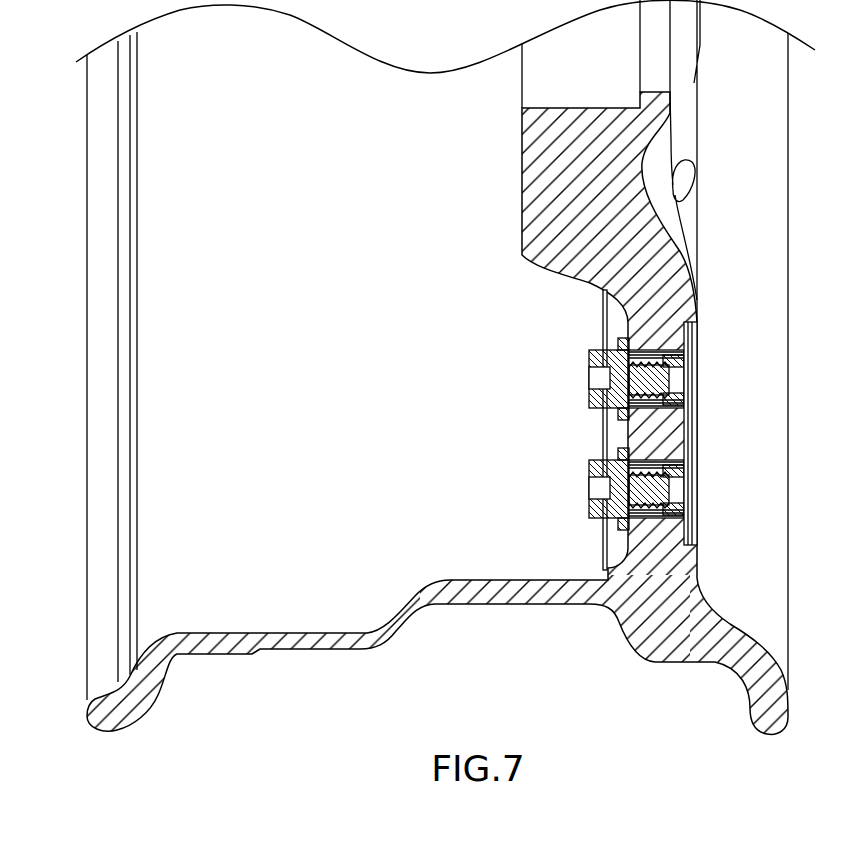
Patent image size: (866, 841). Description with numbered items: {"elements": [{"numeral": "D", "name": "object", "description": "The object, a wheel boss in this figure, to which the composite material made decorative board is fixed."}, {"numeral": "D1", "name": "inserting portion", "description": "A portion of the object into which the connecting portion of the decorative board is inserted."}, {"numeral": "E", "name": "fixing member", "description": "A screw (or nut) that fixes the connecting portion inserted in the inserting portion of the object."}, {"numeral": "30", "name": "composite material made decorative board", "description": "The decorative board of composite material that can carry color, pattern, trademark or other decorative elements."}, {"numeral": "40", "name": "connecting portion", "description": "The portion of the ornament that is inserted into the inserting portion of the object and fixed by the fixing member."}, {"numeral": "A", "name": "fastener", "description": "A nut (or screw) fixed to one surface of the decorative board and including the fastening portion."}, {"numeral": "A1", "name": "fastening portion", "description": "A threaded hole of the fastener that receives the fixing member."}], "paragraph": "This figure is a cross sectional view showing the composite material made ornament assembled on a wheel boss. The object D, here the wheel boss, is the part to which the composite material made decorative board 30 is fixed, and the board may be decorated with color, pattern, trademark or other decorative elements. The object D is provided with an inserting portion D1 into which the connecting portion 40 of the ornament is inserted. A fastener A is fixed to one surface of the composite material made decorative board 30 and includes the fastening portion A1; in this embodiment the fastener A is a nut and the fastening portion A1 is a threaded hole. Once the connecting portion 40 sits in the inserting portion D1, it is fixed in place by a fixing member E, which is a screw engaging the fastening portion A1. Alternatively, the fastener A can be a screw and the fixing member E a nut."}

The wheel rim D is at (228, 663).
The mounting plate of wheel rim D1 is at (615, 347).
The nut E is at (580, 368).
The positioning plate 30 is at (694, 367).
The bolt 40 is at (673, 416).
The fastening assembly A is at (704, 352).
The threaded section of bolt A1 is at (668, 386).